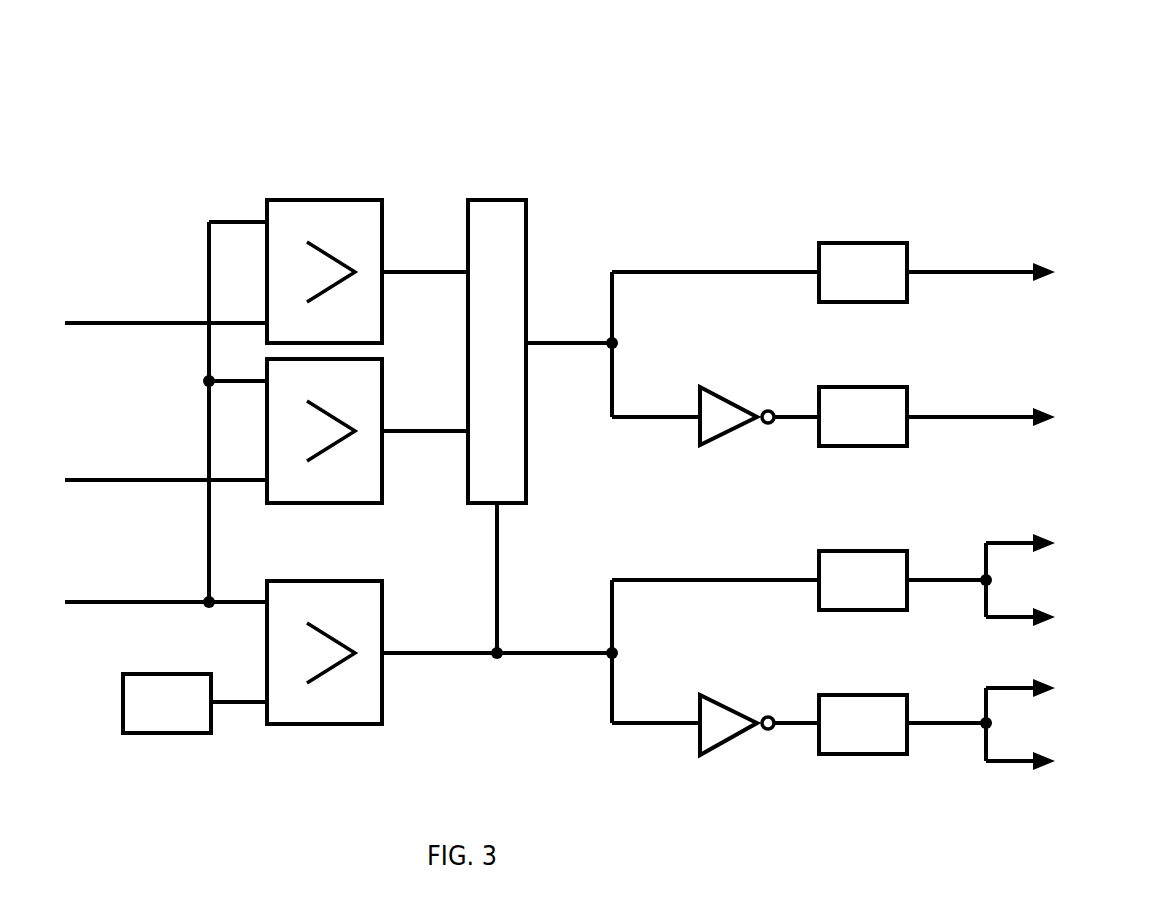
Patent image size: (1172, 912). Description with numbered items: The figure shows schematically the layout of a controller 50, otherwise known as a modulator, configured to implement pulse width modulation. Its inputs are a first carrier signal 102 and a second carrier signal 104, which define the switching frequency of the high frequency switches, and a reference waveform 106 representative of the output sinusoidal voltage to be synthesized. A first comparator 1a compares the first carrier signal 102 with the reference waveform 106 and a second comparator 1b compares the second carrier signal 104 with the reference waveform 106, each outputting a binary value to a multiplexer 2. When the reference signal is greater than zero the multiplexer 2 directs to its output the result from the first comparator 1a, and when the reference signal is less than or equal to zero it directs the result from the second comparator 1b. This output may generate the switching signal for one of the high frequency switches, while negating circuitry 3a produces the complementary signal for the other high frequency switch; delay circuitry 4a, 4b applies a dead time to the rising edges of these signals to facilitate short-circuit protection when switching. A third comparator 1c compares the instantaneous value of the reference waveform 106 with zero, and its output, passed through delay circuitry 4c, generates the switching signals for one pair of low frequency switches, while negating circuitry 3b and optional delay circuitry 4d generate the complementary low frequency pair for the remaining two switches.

The controller 50 is at (858, 115).
The first carrier signal 102 is at (166, 341).
The second carrier signal 104 is at (166, 499).
The reference waveform 106 is at (166, 620).
The first comparator 1a is at (365, 205).
The second comparator 1b is at (360, 365).
The third comparator 1c is at (360, 607).
The multiplexer 2 is at (490, 208).
The negating circuitry 3a is at (712, 412).
The negating circuitry 3b is at (712, 718).
The delay circuitry 4a is at (900, 252).
The delay circuitry 4b is at (897, 393).
The delay circuitry 4c is at (897, 558).
The delay circuitry 4d is at (888, 707).